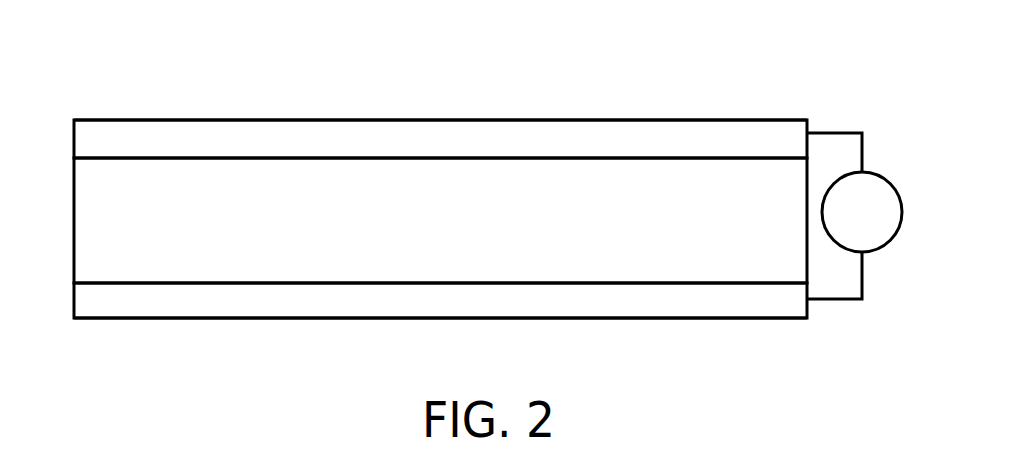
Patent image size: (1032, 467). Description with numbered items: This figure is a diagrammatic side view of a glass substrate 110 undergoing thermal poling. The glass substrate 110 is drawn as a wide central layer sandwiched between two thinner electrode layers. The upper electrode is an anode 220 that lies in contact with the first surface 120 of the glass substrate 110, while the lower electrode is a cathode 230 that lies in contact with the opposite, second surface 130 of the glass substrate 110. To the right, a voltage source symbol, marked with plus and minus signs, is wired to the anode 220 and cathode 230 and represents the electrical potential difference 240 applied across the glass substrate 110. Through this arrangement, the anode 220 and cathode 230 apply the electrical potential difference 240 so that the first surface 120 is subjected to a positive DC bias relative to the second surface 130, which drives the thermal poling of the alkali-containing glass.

The glass substrate 110 is at (462, 232).
The first surface 120 is at (223, 158).
The second surface 130 is at (236, 283).
The anode 220 is at (462, 150).
The cathode 230 is at (462, 313).
The electrical potential difference 240 is at (893, 243).